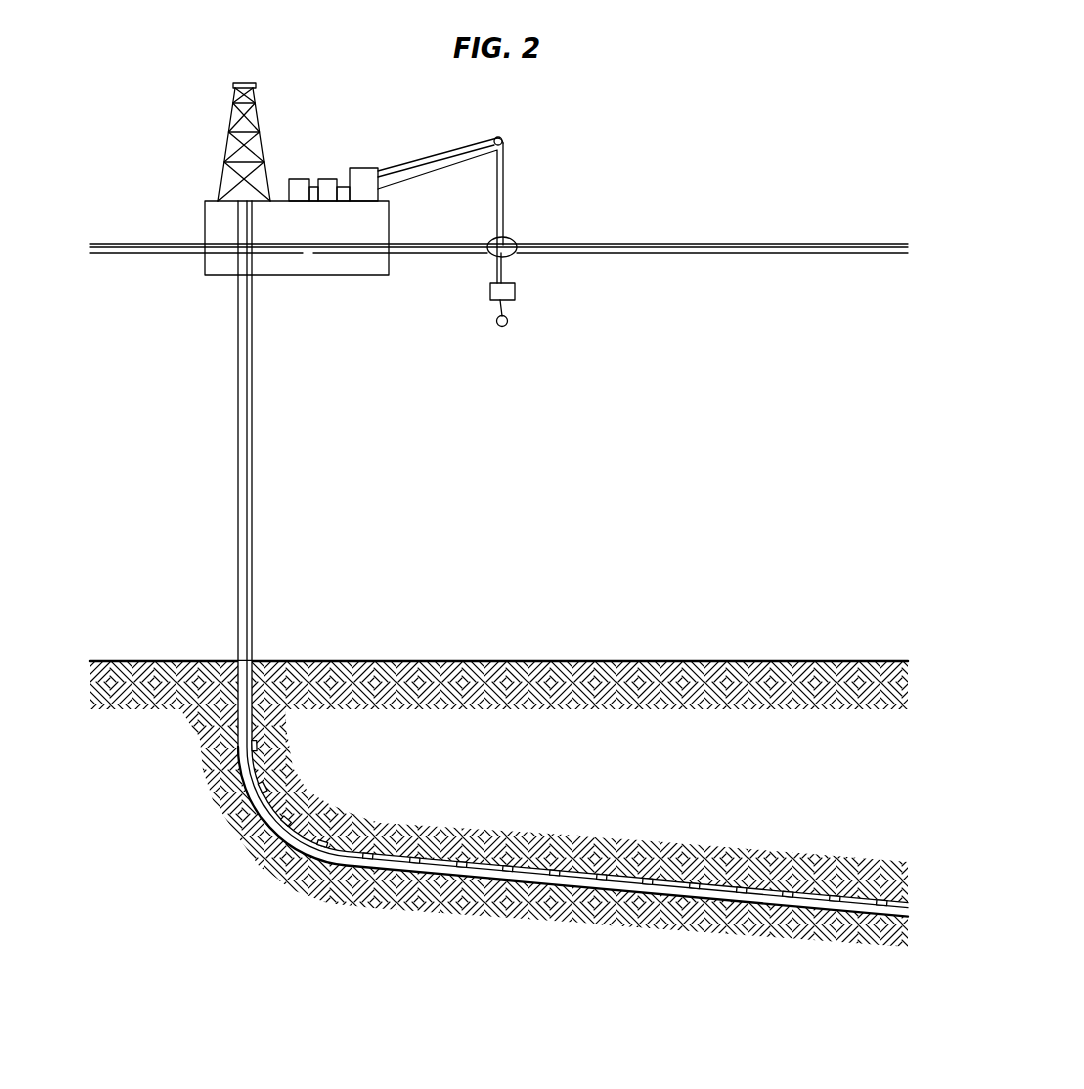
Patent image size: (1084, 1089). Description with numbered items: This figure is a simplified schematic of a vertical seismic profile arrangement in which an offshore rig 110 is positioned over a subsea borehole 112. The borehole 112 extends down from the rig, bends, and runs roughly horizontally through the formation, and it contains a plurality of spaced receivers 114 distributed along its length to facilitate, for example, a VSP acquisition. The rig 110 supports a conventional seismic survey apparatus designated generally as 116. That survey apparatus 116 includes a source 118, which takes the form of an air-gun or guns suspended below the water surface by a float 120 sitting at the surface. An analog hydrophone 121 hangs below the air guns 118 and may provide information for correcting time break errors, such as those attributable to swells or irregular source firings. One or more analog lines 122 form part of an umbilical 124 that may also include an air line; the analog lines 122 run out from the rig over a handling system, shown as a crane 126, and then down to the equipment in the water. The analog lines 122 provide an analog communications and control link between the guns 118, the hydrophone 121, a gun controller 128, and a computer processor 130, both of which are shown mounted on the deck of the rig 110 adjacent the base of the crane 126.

The offshore rig 110 is at (205, 213).
The subsea borehole 112 is at (386, 855).
The spaced receivers 114 is at (602, 870).
The seismic survey apparatus 116 is at (552, 155).
The source 118 is at (490, 291).
The float 120 is at (517, 237).
The analog hydrophone 121 is at (507, 324).
The analog lines 122 is at (497, 210).
The umbilical 124 is at (504, 198).
The crane 126 is at (423, 158).
The gun controller 128 is at (329, 179).
The computer processor 130 is at (300, 179).